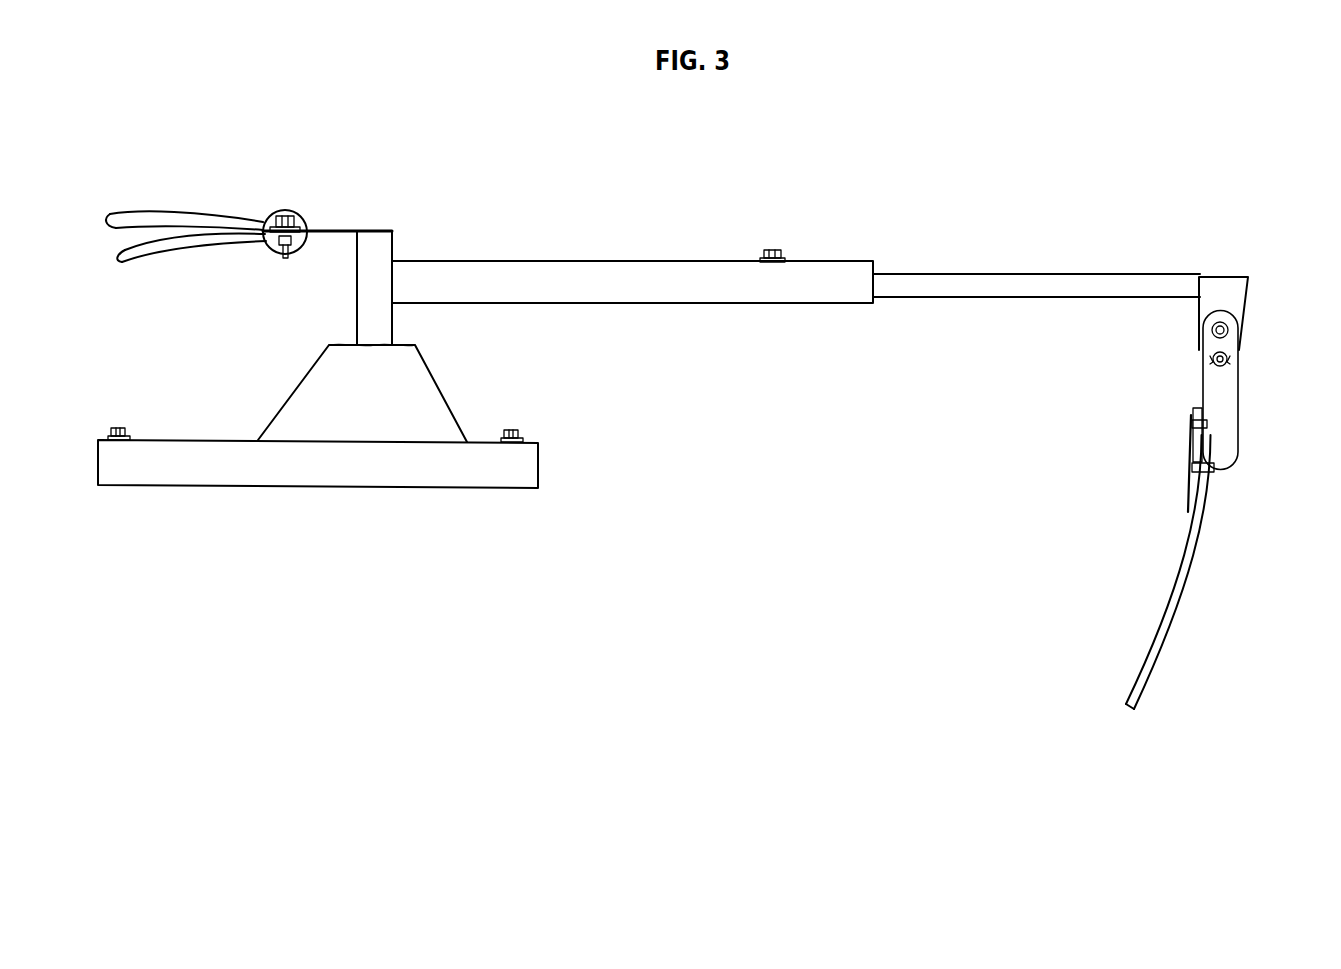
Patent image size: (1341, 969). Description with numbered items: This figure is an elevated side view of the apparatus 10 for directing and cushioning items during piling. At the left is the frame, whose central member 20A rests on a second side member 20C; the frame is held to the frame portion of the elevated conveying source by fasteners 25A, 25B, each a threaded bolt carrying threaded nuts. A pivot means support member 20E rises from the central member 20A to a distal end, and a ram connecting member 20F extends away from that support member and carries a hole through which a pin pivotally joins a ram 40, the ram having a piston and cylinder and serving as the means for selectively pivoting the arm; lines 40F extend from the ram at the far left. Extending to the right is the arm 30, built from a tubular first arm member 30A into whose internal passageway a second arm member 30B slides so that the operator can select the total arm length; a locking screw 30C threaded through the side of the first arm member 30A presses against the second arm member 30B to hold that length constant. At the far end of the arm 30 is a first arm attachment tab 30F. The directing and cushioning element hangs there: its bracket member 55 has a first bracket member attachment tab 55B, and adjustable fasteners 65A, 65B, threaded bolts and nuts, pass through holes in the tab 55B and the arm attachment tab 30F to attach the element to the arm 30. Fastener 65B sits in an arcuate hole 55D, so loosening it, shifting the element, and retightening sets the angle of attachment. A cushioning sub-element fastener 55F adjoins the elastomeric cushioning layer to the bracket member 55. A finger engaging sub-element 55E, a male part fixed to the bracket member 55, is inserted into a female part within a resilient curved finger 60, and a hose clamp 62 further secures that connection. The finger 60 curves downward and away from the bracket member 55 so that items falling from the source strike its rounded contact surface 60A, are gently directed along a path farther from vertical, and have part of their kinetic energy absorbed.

The apparatus 10 is at (543, 192).
The central member 20A is at (357, 418).
The second side member 20C is at (232, 475).
The pivot means support member 20E is at (368, 283).
The ram connecting member 20F is at (343, 228).
The fastener 25A is at (120, 426).
The fastener 25B is at (512, 430).
The arm 30 is at (847, 252).
The first arm member 30A is at (628, 270).
The second arm member 30B is at (1079, 283).
The locking screw 30C is at (776, 250).
The first arm attachment tab 30F is at (1228, 285).
The ram 40 is at (282, 212).
The wires 40F is at (176, 216).
The bracket member 55 is at (1156, 413).
The first bracket member attachment tab 55B is at (1223, 399).
The arcuate hole 55D is at (1214, 356).
The finger engaging sub-element 55E is at (1206, 445).
The cushioning sub-element fastener 55F is at (1204, 423).
The finger 60 is at (1118, 596).
The contact surface 60A is at (1184, 581).
The hose clamp 62 is at (1216, 468).
The adjustable fastener 65A is at (1214, 330).
The adjustable fastener 65B is at (1219, 362).